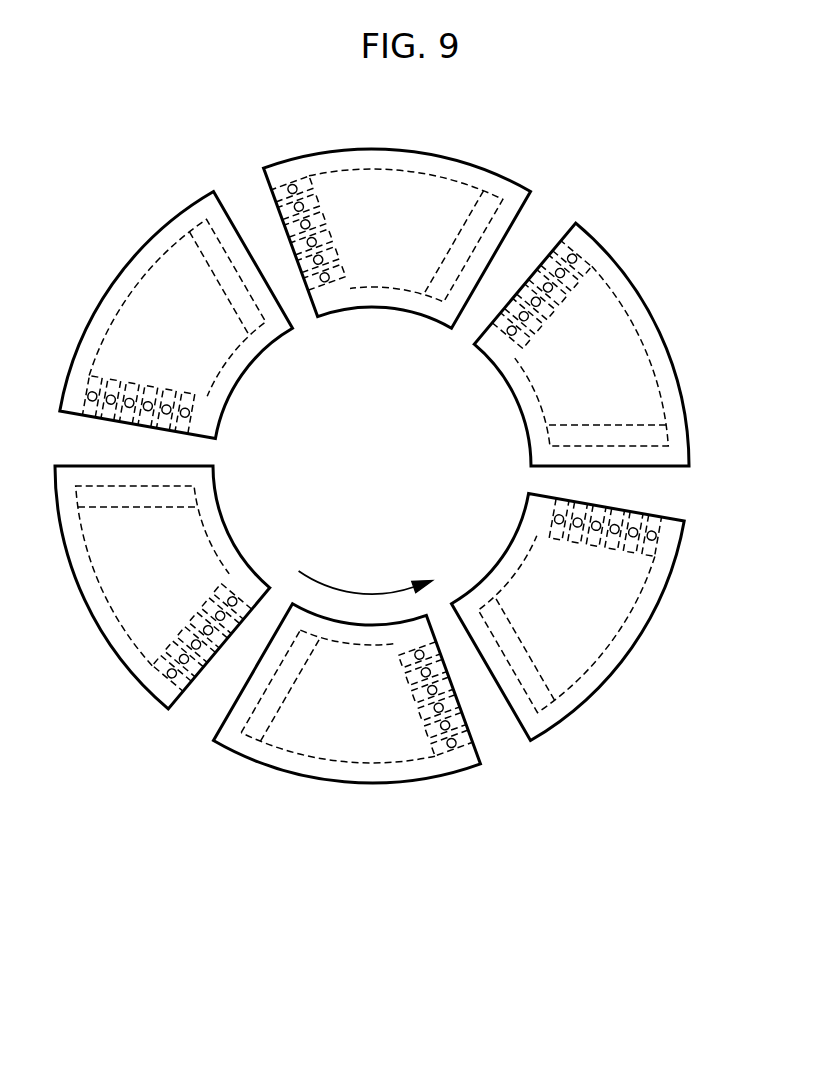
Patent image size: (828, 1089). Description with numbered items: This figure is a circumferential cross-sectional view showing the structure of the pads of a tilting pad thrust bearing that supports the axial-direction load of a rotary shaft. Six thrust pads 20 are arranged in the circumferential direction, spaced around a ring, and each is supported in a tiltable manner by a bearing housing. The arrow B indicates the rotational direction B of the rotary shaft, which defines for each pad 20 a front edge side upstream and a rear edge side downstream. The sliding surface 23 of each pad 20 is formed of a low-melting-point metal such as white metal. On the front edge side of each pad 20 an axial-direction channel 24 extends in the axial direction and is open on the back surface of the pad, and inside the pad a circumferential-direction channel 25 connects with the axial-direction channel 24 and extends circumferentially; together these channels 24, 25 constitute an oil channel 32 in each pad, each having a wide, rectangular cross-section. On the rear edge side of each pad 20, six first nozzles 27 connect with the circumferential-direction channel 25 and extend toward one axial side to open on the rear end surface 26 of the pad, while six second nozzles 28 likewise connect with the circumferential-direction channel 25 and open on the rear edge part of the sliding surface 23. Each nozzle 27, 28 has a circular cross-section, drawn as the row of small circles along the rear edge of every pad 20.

The thrust pad 20 is at (128, 683).
The sliding surface 23 is at (113, 648).
The axial-direction channel 24 is at (243, 742).
The circumferential-direction channel 25 is at (335, 757).
The rear end surface 26 is at (178, 708).
The first nozzle 27 is at (473, 766).
The second nozzle 28 is at (452, 750).
The oil channel 32 is at (341, 856).
The rotational direction B is at (363, 597).